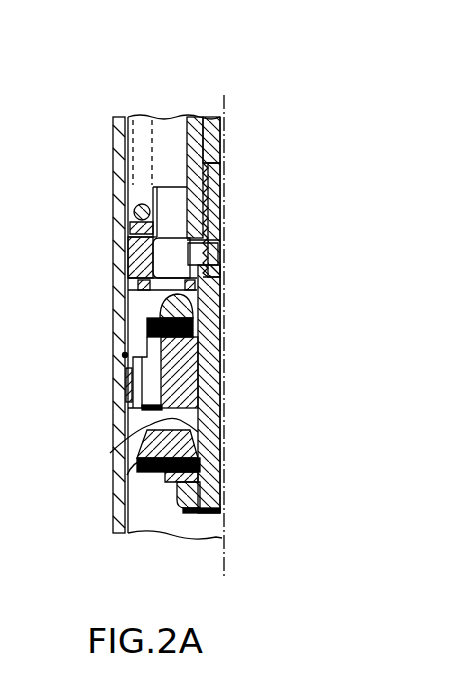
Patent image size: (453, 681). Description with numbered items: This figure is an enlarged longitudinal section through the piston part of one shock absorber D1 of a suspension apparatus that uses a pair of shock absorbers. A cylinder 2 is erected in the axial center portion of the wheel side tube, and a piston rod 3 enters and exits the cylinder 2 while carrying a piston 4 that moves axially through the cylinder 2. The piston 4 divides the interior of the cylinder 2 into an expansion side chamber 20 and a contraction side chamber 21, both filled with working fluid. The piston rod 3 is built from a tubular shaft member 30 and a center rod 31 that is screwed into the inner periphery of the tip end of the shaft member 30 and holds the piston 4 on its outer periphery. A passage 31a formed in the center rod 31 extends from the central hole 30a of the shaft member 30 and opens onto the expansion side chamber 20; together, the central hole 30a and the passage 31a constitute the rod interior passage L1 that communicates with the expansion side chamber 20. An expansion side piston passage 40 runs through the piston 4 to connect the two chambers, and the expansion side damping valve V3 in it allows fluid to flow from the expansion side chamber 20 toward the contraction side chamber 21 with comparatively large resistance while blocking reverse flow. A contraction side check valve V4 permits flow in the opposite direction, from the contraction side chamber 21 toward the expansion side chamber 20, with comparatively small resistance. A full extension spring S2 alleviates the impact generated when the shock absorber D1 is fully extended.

The cylinder 2 is at (118, 130).
The piston rod 3 is at (200, 516).
The piston 4 is at (127, 355).
The expansion side chamber 20 is at (133, 290).
The contraction side chamber 21 is at (135, 510).
The shaft member 30 is at (183, 140).
The central hole 30a is at (215, 117).
The center rod 31 is at (157, 418).
The passage 31a is at (216, 239).
The expansion side piston passage 40 is at (152, 378).
The full extension spring S2 is at (135, 208).
The expansion side damping valve V3 is at (157, 327).
The contraction side check valve V4 is at (145, 468).
The shock absorber D1 is at (268, 110).
The rod interior passage L1 is at (227, 152).